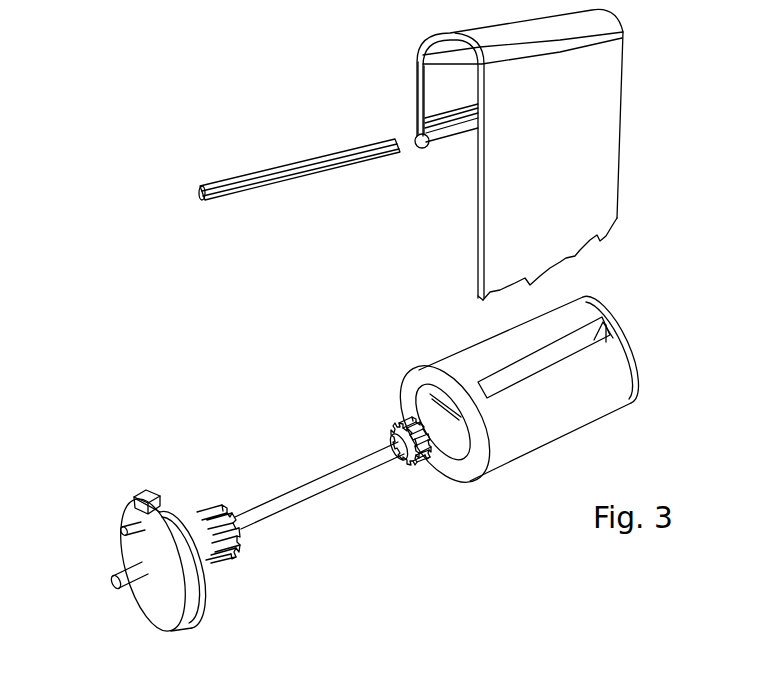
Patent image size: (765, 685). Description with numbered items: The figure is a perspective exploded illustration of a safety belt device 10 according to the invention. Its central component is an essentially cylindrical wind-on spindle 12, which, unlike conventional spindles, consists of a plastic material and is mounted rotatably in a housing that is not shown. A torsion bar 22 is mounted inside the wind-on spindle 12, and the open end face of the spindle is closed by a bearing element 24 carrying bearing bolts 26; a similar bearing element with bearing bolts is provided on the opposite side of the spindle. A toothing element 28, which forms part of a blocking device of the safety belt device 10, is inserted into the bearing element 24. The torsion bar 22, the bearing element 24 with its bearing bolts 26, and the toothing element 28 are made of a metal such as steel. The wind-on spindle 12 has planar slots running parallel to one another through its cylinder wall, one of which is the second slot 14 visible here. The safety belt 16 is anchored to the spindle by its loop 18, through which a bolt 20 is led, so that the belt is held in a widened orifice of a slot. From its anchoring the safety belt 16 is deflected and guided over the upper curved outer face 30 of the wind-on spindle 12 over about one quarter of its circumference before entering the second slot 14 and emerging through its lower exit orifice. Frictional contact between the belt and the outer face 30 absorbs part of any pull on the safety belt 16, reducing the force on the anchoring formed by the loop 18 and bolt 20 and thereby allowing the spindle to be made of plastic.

The safety belt device 10 is at (107, 188).
The wind-on spindle 12 is at (530, 385).
The second slot 14 is at (607, 313).
The safety belt 16 is at (602, 130).
The loop 18 is at (425, 150).
The bolt 20 is at (283, 172).
The torsion bar 22 is at (313, 490).
The bearing element 24 is at (142, 564).
The bearing bolts 26 is at (130, 588).
The toothing element 28 is at (150, 499).
The outer face 30 is at (487, 357).